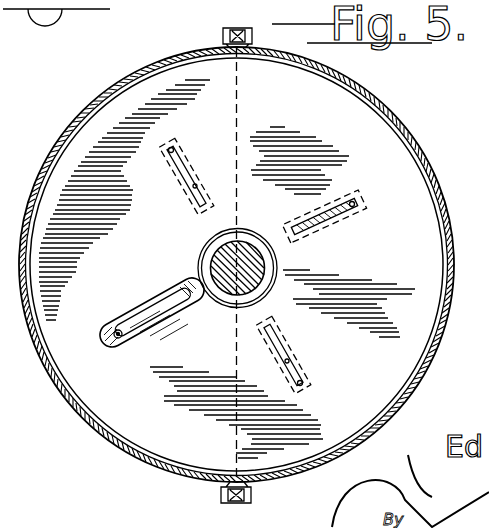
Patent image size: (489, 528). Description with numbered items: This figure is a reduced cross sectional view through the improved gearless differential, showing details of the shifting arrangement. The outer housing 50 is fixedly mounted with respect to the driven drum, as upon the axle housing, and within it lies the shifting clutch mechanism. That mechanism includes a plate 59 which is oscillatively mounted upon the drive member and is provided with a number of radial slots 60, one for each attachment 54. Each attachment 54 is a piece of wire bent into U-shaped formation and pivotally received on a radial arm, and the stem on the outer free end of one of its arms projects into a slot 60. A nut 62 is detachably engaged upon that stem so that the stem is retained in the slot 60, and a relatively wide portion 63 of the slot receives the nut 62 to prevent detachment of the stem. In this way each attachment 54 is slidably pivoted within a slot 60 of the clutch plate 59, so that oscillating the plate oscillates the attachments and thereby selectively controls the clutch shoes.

The housing 50 is at (443, 190).
The plate 59 is at (343, 127).
The attachment 54 is at (357, 200).
The radial slot 60 is at (196, 187).
The relatively wide portion of slot 63 is at (158, 326).
The nut 62 is at (120, 338).